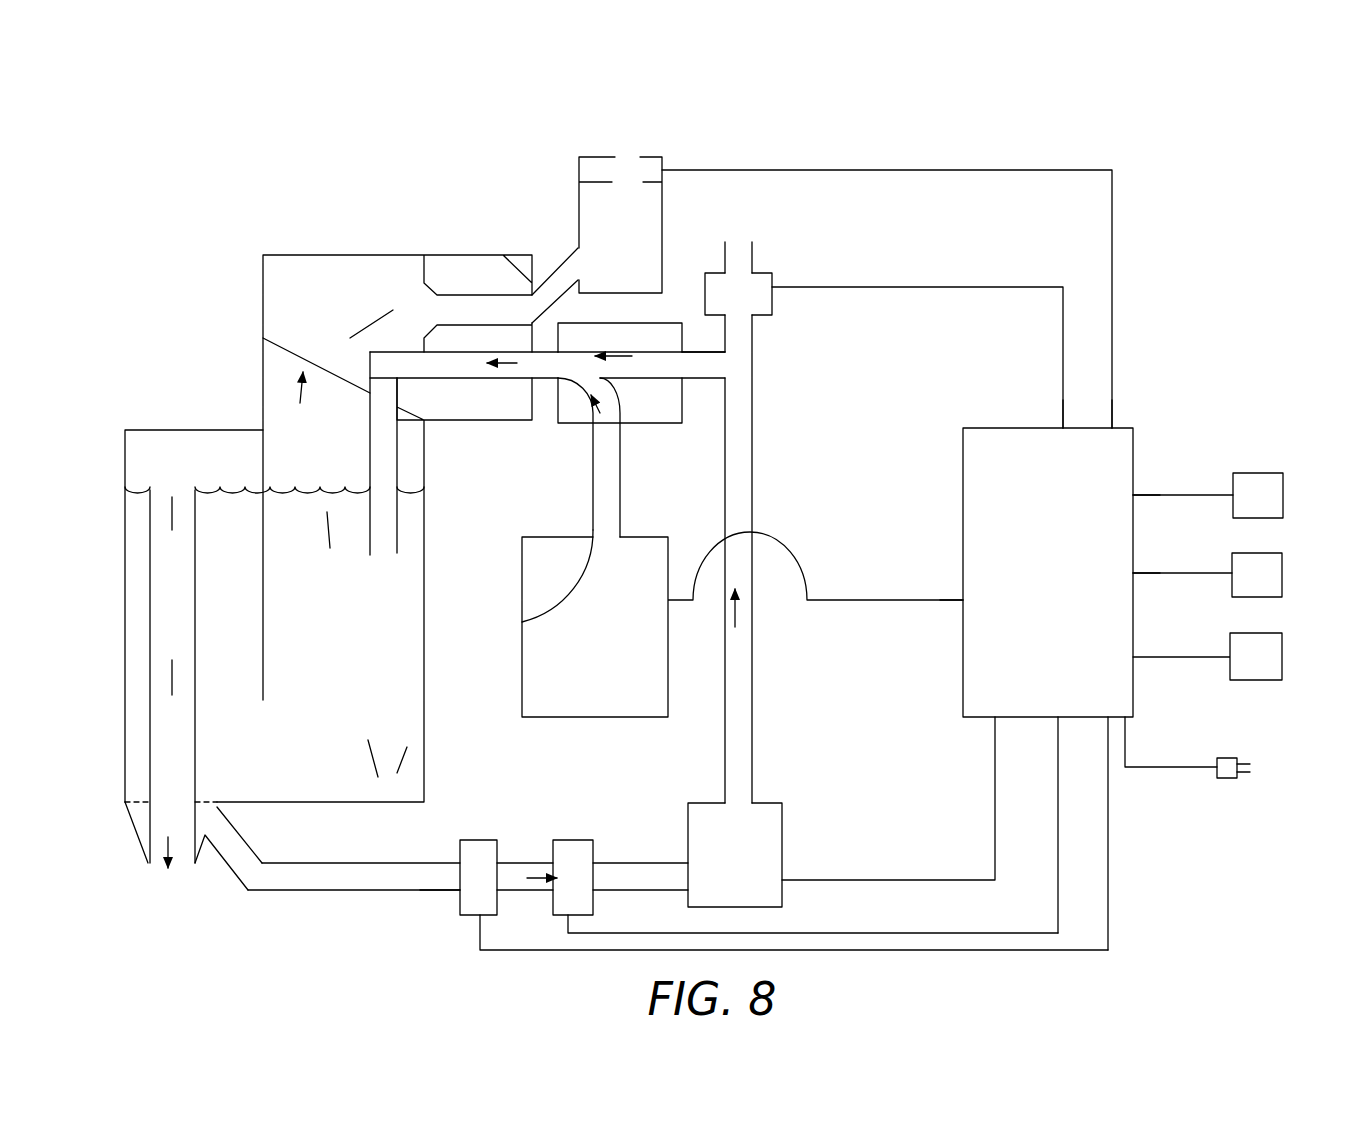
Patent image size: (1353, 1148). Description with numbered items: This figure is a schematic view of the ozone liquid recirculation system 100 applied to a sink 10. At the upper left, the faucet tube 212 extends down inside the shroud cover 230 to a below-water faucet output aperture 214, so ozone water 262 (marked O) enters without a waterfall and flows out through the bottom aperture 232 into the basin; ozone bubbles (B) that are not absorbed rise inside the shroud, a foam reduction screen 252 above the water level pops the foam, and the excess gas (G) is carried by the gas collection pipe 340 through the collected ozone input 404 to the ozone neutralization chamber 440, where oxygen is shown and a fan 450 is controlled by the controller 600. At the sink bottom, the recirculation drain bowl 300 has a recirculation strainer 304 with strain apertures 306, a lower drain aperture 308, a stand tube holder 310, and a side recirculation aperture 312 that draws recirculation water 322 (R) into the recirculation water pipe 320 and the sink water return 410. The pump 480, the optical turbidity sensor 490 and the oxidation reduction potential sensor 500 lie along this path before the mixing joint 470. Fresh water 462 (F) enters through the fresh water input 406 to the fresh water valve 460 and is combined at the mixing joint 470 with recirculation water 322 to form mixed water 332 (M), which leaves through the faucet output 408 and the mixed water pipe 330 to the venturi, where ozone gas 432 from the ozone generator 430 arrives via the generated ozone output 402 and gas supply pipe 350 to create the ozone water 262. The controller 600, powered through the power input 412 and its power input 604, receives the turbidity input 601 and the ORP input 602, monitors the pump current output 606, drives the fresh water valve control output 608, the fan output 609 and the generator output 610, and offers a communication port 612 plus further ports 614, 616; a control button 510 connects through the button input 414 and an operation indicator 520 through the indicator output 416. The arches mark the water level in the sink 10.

The sink 10 is at (125, 548).
The ozone liquid recirculation system 100 is at (1186, 164).
The faucet tube 212 is at (397, 533).
The faucet output aperture 214 is at (391, 559).
The shroud cover 230 is at (263, 282).
The bottom aperture 232 is at (256, 705).
The foam reduction screen 252 is at (280, 348).
The ozone water 262 is at (467, 368).
The recirculation drain bowl 300 is at (130, 823).
The recirculation strainer 304 is at (137, 800).
The strain apertures 306 is at (211, 797).
The lower drain aperture 308 is at (183, 863).
The stand tube holder 310 is at (143, 852).
The recirculation aperture 312 is at (213, 826).
The recirculation water pipe 320 is at (318, 892).
The recirculation water 322 is at (412, 863).
The mixed water pipe 330 is at (708, 380).
The mixed water 332 is at (657, 380).
The gas collection pipe 340 is at (557, 267).
The gas supply pipe 350 is at (592, 477).
The generated ozone output 402 is at (522, 627).
The collected ozone input 404 is at (577, 252).
The fresh water input 406 is at (753, 253).
The faucet output 408 is at (702, 348).
The sink water return 410 is at (427, 890).
The power input 412 is at (1160, 768).
The button input 414 is at (1135, 497).
The indicator output 416 is at (1135, 573).
The ozone generator 430 is at (520, 672).
The ozone gas 432 is at (612, 518).
The ozone neutralization chamber 440 is at (663, 217).
The fan 450 is at (663, 162).
The fresh water valve 460 is at (773, 307).
The fresh water 462 is at (773, 280).
The mixing joint 470 is at (752, 362).
The pump 480 is at (783, 833).
The optical turbidity sensor 490 is at (477, 840).
The oxidation reduction potential sensor 500 is at (567, 840).
The control button 510 is at (1285, 497).
The operation indicator 520 is at (1283, 573).
The controller 600 is at (1003, 428).
The turbidity input 601 is at (1121, 713).
The ORP input 602 is at (1073, 713).
The power input 604 is at (1127, 720).
The pump current output 606 is at (1009, 713).
The fresh water valve control output 608 is at (1078, 464).
The fan output 609 is at (1128, 464).
The generator output 610 is at (1004, 616).
The communication port 612 is at (1124, 673).
The controller port 614 is at (1119, 514).
The controller port 616 is at (1119, 589).